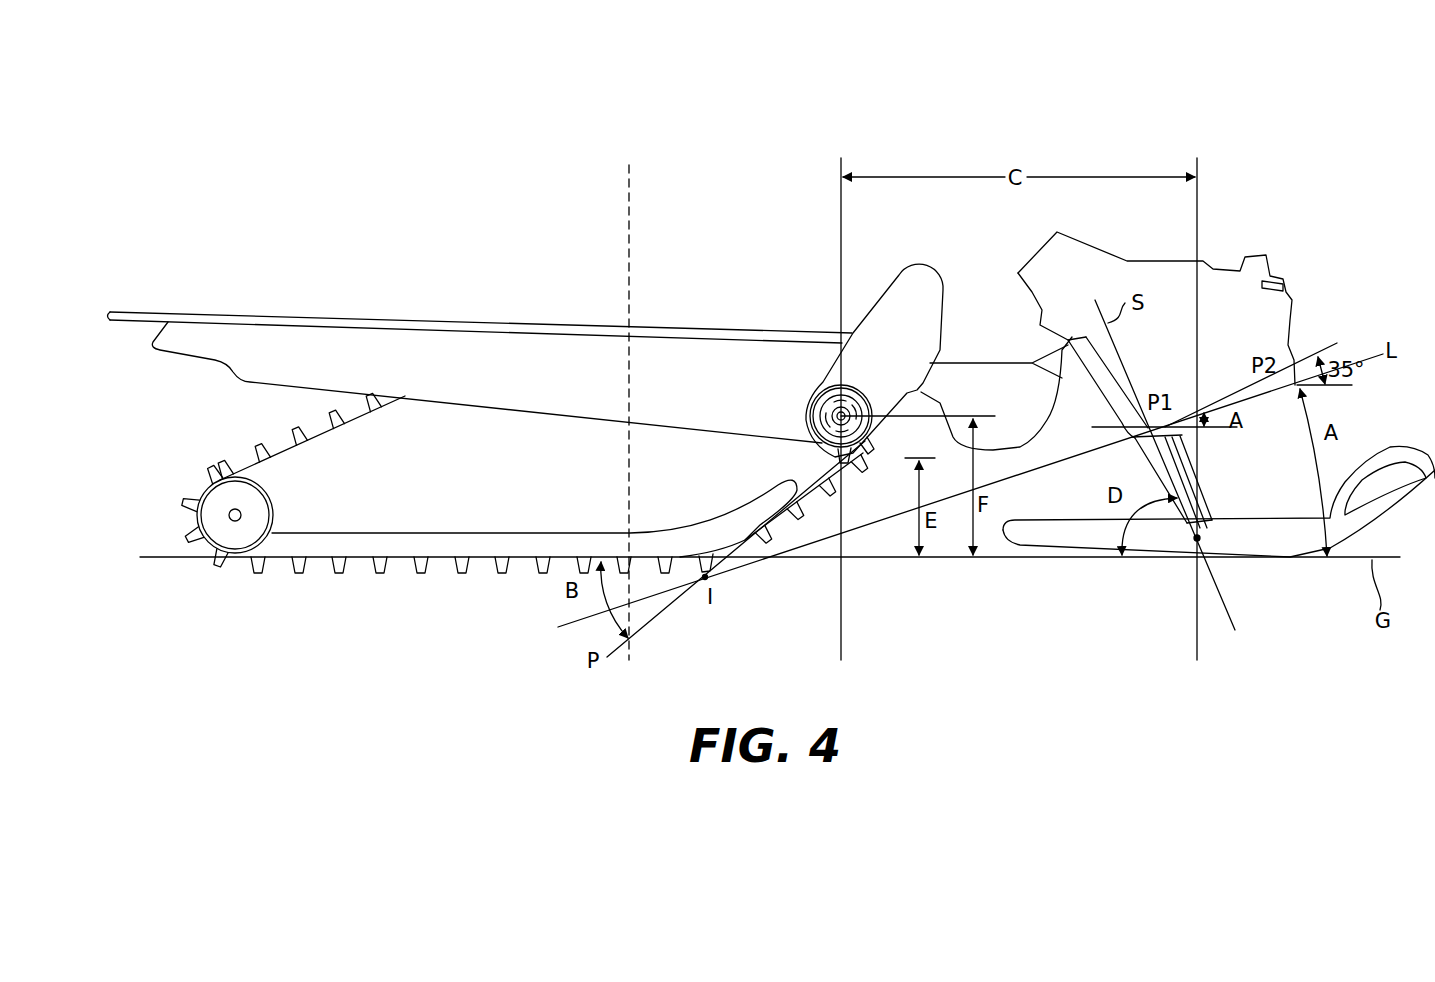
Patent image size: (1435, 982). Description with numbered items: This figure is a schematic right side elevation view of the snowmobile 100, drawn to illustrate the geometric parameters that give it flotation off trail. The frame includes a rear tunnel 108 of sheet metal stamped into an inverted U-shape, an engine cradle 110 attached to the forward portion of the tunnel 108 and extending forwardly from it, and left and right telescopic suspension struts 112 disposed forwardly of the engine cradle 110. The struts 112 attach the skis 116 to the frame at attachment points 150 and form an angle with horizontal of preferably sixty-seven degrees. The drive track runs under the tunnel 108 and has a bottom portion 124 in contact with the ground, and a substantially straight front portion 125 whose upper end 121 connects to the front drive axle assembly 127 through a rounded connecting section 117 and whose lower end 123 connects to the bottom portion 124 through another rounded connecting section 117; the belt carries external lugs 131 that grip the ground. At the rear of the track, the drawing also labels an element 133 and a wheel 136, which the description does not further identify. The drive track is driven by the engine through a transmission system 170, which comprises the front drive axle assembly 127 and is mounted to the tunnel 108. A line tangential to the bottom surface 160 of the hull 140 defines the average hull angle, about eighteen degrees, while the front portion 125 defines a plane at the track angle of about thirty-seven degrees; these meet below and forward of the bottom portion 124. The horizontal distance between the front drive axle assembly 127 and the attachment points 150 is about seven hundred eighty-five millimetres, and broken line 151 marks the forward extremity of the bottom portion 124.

The snowmobile 100 is at (968, 138).
The rear tunnel 108 is at (433, 340).
The engine cradle 110 is at (978, 377).
The telescopic suspension struts 112 is at (1195, 500).
The skis 116 is at (1277, 527).
The rounded connecting sections 117 is at (203, 545).
The upper end 121 is at (857, 460).
The lower end 123 is at (783, 512).
The bottom portion 124 is at (445, 560).
The front portion 125 is at (838, 518).
The front drive axle assembly 127 is at (842, 395).
The external lugs 131 is at (340, 565).
The slide rail 133 is at (393, 540).
The rear idler wheel 136 is at (237, 522).
The hull 140 is at (1300, 292).
The attachment points 150 is at (1197, 540).
The broken line 151 is at (629, 183).
The bottom surface 160 is at (1247, 400).
The transmission system 170 is at (880, 300).